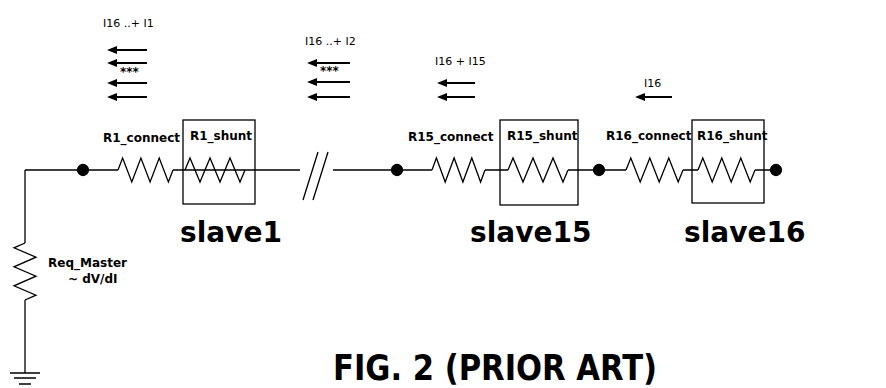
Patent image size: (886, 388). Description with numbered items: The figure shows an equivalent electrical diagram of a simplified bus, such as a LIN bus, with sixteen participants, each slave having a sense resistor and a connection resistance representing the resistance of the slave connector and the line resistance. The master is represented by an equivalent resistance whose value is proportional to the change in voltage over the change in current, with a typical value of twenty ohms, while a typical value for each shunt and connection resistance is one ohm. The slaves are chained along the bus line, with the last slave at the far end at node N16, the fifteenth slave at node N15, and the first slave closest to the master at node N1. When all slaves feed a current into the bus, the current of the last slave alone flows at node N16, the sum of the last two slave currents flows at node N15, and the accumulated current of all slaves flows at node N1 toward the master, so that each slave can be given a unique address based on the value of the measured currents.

The node N1 is at (80, 165).
The node N15 is at (392, 165).
The node N16 is at (597, 163).